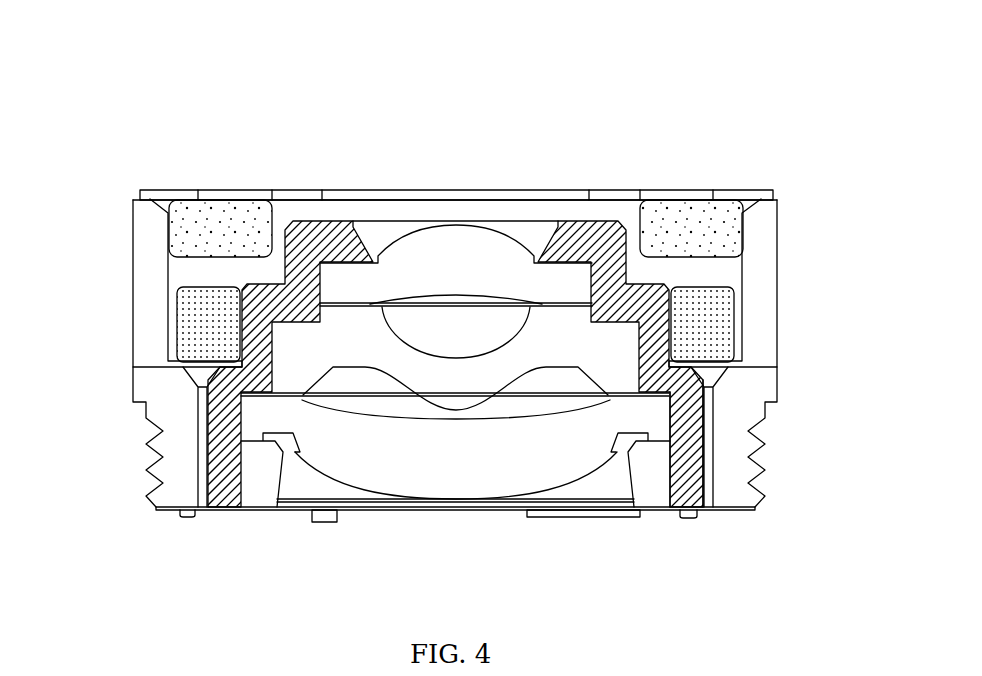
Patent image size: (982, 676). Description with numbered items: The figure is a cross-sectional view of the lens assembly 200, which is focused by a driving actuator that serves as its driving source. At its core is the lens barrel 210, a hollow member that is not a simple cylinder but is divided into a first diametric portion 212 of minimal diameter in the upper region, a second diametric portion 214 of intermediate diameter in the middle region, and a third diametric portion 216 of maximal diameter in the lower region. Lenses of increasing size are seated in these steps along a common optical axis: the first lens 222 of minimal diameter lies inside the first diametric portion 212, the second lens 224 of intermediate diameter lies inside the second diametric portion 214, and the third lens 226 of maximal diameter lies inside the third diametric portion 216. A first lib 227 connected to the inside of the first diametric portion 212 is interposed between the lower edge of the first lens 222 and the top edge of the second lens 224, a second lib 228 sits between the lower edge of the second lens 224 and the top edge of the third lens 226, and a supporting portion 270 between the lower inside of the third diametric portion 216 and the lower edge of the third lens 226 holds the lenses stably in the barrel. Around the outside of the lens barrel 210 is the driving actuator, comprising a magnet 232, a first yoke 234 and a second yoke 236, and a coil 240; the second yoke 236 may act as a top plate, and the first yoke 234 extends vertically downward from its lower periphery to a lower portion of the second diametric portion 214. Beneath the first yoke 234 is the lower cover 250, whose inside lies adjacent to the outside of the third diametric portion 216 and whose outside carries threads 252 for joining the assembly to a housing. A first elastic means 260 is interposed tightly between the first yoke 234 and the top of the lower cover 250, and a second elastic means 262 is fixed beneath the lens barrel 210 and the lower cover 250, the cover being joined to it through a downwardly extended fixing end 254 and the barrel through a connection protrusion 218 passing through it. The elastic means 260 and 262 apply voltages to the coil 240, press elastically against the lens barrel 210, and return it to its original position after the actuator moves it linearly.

The lens assembly 200 is at (157, 68).
The lens barrel 210 is at (322, 221).
The first diametric portion 212 is at (630, 233).
The second diametric portion 214 is at (655, 330).
The third diametric portion 216 is at (687, 465).
The connection protrusion 218 is at (325, 523).
The first lens 222 is at (459, 243).
The second lens 224 is at (448, 382).
The third lens 226 is at (380, 477).
The first lib 227 is at (368, 304).
The second lib 228 is at (642, 397).
The magnet 232 is at (705, 210).
The first yoke 234 is at (148, 270).
The second yoke 236 is at (230, 205).
The coil 240 is at (197, 318).
The lower cover 250 is at (735, 487).
The threads 252 is at (765, 433).
The fixing end 254 is at (573, 517).
The first elastic means 260 is at (712, 387).
The second elastic means 262 is at (217, 510).
The supporting portion 270 is at (258, 510).